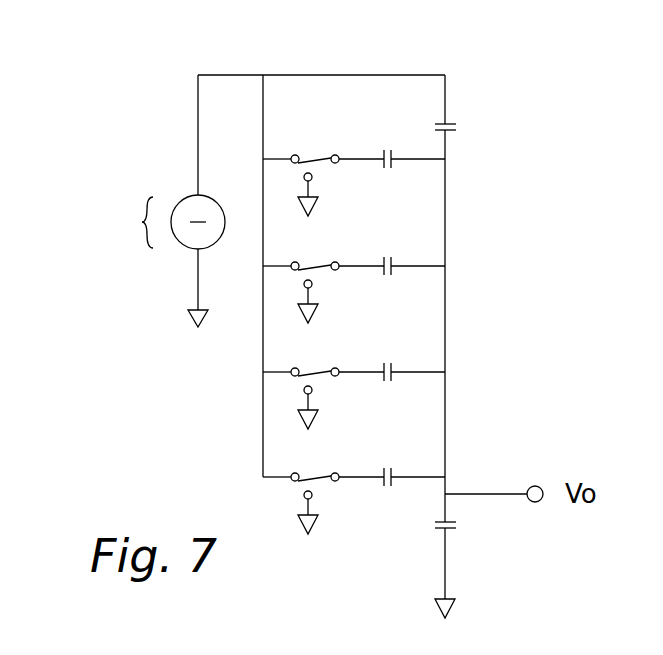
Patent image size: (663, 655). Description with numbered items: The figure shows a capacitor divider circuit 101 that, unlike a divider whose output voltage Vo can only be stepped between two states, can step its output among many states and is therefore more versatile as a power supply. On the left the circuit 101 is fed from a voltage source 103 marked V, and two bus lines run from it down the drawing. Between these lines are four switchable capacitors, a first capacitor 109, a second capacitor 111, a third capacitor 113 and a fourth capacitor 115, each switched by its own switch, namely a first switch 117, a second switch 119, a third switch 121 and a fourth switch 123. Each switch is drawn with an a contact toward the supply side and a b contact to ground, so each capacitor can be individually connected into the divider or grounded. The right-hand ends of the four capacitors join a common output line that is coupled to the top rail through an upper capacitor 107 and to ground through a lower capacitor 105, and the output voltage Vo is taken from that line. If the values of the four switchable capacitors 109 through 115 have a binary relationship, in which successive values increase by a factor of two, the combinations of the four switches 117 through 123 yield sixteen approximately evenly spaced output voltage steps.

The capacitor divider circuit 101 is at (172, 92).
The voltage source 103 is at (180, 193).
The output capacitor C6 105 is at (457, 545).
The capacitor C5 107 is at (452, 118).
The capacitor C1 109 is at (399, 167).
The capacitor C2 111 is at (405, 274).
The capacitor C3 113 is at (395, 353).
The capacitor C4 115 is at (392, 452).
The switch S1 117 is at (294, 138).
The switch S2 119 is at (277, 278).
The switch S3 121 is at (282, 382).
The switch S4 123 is at (290, 490).